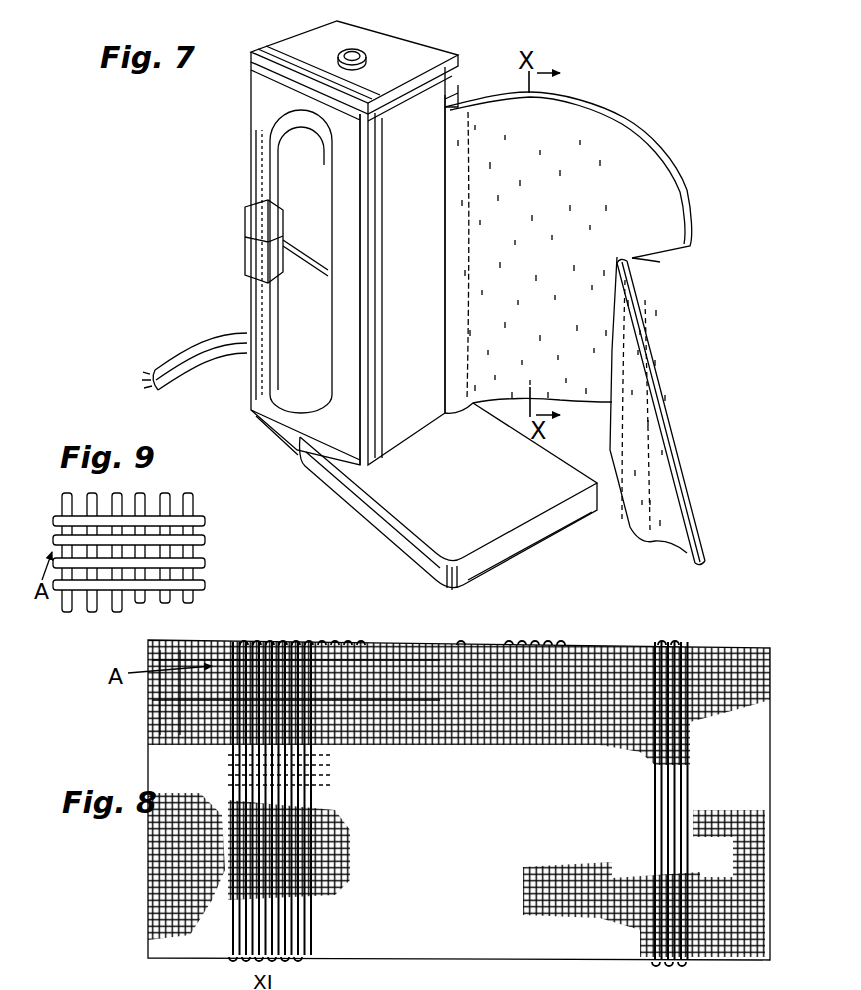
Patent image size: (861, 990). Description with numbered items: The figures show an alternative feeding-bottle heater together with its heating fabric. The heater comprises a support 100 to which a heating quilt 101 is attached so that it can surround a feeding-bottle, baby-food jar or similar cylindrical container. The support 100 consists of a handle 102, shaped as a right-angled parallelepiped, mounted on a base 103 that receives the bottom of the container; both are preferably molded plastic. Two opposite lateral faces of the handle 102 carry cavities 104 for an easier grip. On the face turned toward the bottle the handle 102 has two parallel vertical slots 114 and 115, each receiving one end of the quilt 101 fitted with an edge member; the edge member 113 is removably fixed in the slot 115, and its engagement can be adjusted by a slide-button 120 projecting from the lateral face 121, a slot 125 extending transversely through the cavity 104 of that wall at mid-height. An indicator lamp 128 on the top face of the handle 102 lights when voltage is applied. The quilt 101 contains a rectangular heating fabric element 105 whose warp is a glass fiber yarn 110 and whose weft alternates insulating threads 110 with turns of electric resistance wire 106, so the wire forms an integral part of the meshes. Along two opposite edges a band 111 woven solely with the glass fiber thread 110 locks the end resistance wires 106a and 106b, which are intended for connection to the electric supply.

In FIG. 7, the support 100 is at (226, 130).
In FIG. 7, the heating quilt 101 is at (635, 118).
In FIG. 7, the handle 102 is at (250, 181).
In FIG. 7, the base 103 is at (540, 509).
In FIG. 7, the cavities 104 is at (283, 371).
In FIG. 8, the heating fabric element 105 is at (412, 940).
In FIG. 9, the electric resistance wire 106 is at (190, 494).
In FIG. 8, the electric resistance wire 106 is at (243, 950).
In FIG. 8, the resistance wire 106a is at (235, 643).
In FIG. 8, the resistance wire 106b is at (688, 643).
In FIG. 9, the glass fiber yarn 110 is at (200, 562).
In FIG. 8, the glass fiber yarn 110 is at (406, 657).
In FIG. 9, the woven band 111 is at (128, 612).
In FIG. 8, the woven band 111 is at (212, 716).
In FIG. 7, the edge member 113 is at (672, 428).
In FIG. 7, the slot 114 is at (458, 92).
In FIG. 7, the slot 115 is at (380, 269).
In FIG. 7, the slide-button 120 is at (253, 251).
In FIG. 7, the lateral face 121 is at (258, 303).
In FIG. 7, the slot 125 is at (305, 264).
In FIG. 7, the indicator lamp 128 is at (362, 59).